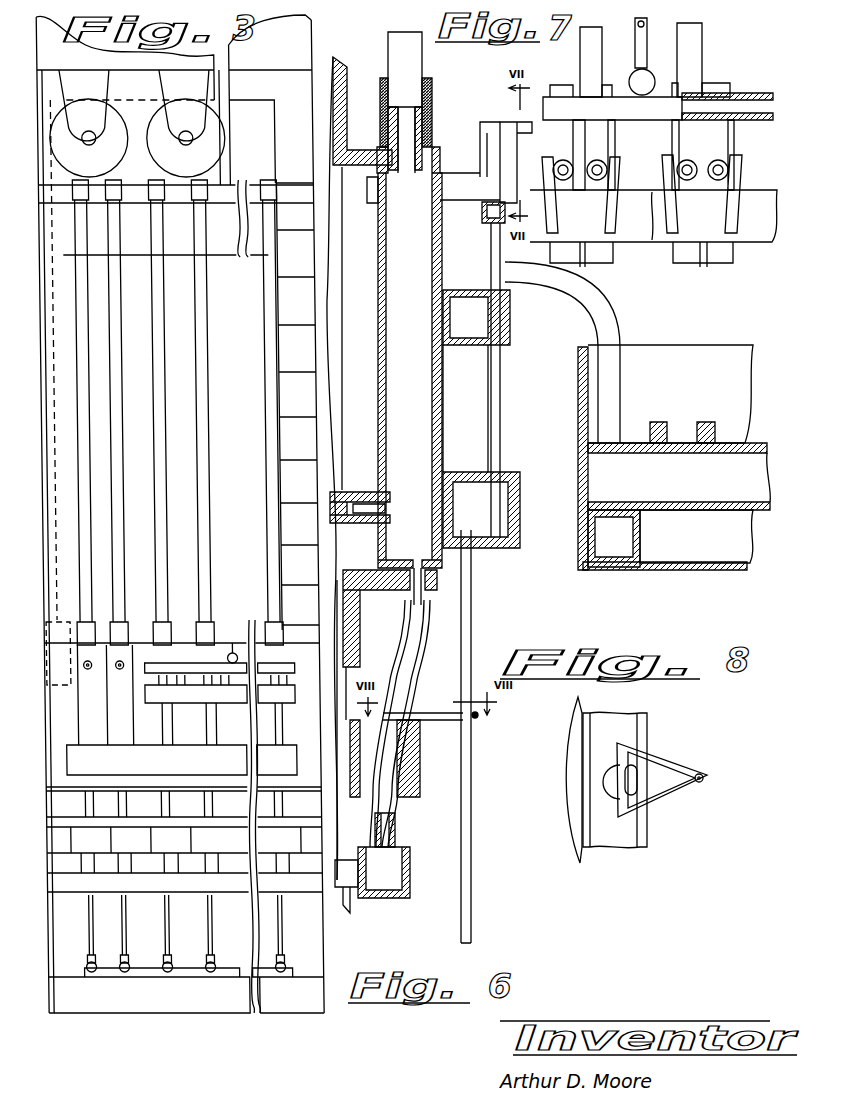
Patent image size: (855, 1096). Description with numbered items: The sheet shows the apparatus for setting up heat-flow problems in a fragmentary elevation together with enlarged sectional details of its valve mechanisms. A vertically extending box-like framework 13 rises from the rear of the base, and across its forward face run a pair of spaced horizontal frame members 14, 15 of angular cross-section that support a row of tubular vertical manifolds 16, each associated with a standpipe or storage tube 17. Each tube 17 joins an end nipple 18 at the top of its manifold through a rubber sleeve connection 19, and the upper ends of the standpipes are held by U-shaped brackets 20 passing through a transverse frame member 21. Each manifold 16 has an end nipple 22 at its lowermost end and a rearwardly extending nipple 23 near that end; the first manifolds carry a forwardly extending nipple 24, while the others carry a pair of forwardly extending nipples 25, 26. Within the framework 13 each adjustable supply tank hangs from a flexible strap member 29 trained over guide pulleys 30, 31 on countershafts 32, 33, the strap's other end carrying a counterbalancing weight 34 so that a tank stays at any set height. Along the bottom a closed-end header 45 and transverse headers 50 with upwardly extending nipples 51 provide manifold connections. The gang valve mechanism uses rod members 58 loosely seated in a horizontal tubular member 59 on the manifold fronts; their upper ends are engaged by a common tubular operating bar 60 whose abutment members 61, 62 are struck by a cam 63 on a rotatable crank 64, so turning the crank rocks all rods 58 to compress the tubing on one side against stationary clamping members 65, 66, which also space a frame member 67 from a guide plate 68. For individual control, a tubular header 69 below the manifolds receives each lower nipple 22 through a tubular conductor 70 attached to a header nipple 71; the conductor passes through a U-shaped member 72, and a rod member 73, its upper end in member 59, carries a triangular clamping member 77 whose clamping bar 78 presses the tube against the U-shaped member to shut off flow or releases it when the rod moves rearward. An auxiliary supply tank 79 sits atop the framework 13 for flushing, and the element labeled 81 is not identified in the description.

In FIG. 6, the vertically extending framework 13 is at (334, 250).
In FIG. 3, the horizontal frame member 14 is at (177, 660).
In FIG. 6, the horizontal frame member 14 is at (368, 147).
In FIG. 3, the horizontal frame member 15 is at (203, 808).
In FIG. 6, the horizontal frame member 15 is at (358, 570).
In FIG. 3, the manifold 16 is at (84, 736).
In FIG. 6, the manifold 16 is at (381, 348).
In FIG. 3, the standpipe 17 is at (88, 448).
In FIG. 6, the standpipe 17 is at (412, 50).
In FIG. 6, the end nipple 18 is at (432, 112).
In FIG. 6, the rubber sleeve connection 19 is at (433, 95).
In FIG. 3, the U-shaped bracket 20 is at (277, 182).
In FIG. 3, the transverse frame member 21 is at (45, 198).
In FIG. 6, the end nipple 22 is at (432, 594).
In FIG. 6, the rearwardly extending nipple 23 is at (380, 490).
In FIG. 3, the forwardly extending nipple 24 is at (77, 672).
In FIG. 3, the forwardly extending nipple 25 is at (257, 692).
In FIG. 3, the forwardly extending nipple 26 is at (289, 692).
In FIG. 3, the flexible strap member 29 is at (226, 181).
In FIG. 3, the guide pulley 30 is at (156, 156).
In FIG. 3, the guide pulley 31 is at (50, 138).
In FIG. 3, the countershaft 32 is at (191, 126).
In FIG. 3, the countershaft 33 is at (94, 126).
In FIG. 3, the weight 34 is at (44, 622).
In FIG. 7, the header 45 is at (641, 527).
In FIG. 7, the transversely extending header 50 is at (675, 502).
In FIG. 7, the upwardly extending nipple 51 is at (655, 420).
In FIG. 6, the rod member 58 is at (500, 408).
In FIG. 7, the rod member 58 is at (584, 264).
In FIG. 3, the tubular horizontally disposed member 59 is at (129, 764).
In FIG. 6, the tubular horizontally disposed member 59 is at (520, 507).
In FIG. 3, the tubular operating bar 60 is at (283, 668).
In FIG. 6, the tubular operating bar 60 is at (481, 214).
In FIG. 7, the tubular operating bar 60 is at (573, 100).
In FIG. 7, the abutment member 61 is at (587, 58).
In FIG. 6, the abutment member 62 is at (489, 125).
In FIG. 7, the abutment member 62 is at (693, 50).
In FIG. 6, the cam 63 is at (482, 147).
In FIG. 7, the cam 63 is at (650, 72).
In FIG. 7, the crank 64 is at (646, 50).
In FIG. 7, the stationary clamping member 65 is at (553, 157).
In FIG. 7, the stationary clamping member 66 is at (618, 158).
In FIG. 6, the frame member 67 is at (454, 346).
In FIG. 7, the frame member 67 is at (757, 192).
In FIG. 6, the plate 68 is at (514, 327).
In FIG. 7, the plate 68 is at (632, 232).
In FIG. 6, the tubular header 69 is at (410, 873).
In FIG. 6, the tubular conductor 70 is at (404, 688).
In FIG. 8, the tubular conductor 70 is at (624, 716).
In FIG. 6, the nipple 71 is at (395, 828).
In FIG. 3, the U-shaped member 72 is at (57, 836).
In FIG. 6, the U-shaped member 72 is at (418, 782).
In FIG. 8, the U-shaped member 72 is at (648, 828).
In FIG. 3, the rod member 73 is at (95, 908).
In FIG. 6, the rod member 73 is at (470, 634).
In FIG. 8, the rod member 73 is at (710, 777).
In FIG. 3, the triangularly shaped clamping member 77 is at (108, 832).
In FIG. 8, the triangularly shaped clamping member 77 is at (683, 760).
In FIG. 8, the clamping bar 78 is at (617, 767).
In FIG. 3, the auxiliary supply tank 79 is at (302, 42).
In FIG. 6, the wire 81 is at (333, 490).